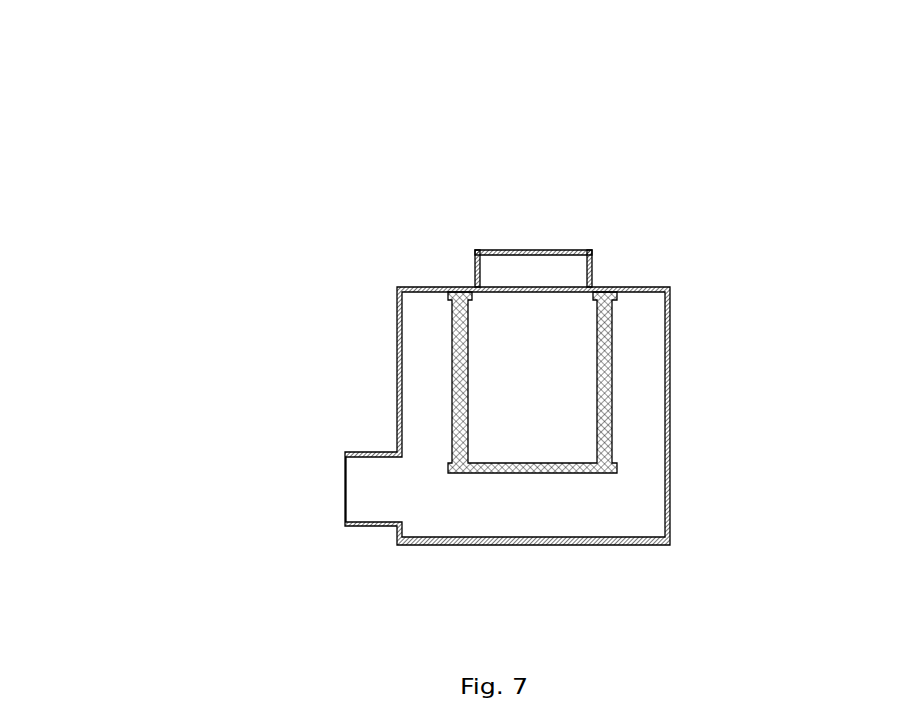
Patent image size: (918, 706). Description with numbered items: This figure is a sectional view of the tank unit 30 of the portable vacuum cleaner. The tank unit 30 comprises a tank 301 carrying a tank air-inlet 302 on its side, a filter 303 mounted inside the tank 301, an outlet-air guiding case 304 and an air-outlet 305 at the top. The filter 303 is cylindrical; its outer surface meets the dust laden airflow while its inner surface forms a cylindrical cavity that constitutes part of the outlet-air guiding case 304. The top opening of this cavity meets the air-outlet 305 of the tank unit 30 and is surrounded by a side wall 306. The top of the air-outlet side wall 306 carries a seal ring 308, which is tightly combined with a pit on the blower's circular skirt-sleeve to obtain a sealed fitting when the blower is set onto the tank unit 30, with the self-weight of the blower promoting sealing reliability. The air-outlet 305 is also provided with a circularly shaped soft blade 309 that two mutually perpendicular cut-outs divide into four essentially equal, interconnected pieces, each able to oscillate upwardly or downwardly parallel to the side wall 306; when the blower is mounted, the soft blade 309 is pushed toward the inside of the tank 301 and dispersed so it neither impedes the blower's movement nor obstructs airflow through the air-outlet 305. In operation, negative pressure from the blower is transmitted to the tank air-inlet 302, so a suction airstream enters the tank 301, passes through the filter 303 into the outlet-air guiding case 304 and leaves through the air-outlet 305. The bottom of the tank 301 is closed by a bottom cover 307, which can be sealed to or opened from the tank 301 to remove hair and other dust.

The tank unit 30 is at (153, 108).
The tank 301 is at (670, 500).
The tank air-inlet 302 is at (345, 490).
The filter 303 is at (457, 390).
The outlet-air guiding case 304 is at (560, 398).
The air-outlet 305 is at (520, 275).
The side wall 306 is at (592, 268).
The bottom cover 307 is at (538, 545).
The seal ring 308 is at (477, 256).
The soft blade 309 is at (477, 284).